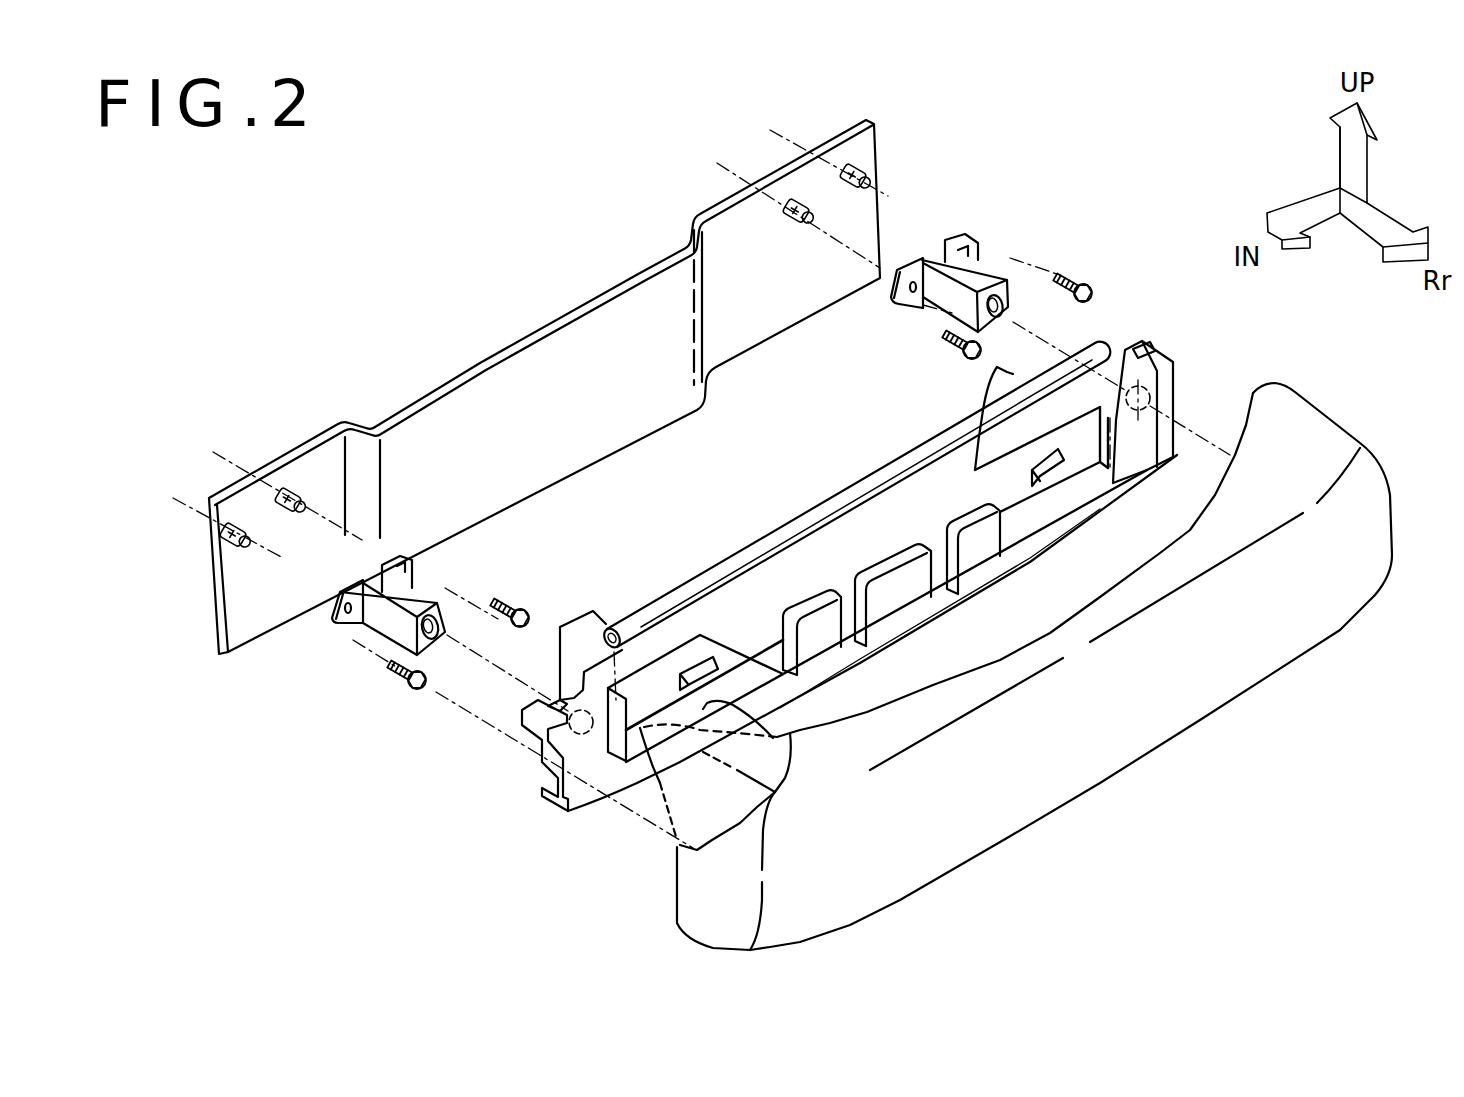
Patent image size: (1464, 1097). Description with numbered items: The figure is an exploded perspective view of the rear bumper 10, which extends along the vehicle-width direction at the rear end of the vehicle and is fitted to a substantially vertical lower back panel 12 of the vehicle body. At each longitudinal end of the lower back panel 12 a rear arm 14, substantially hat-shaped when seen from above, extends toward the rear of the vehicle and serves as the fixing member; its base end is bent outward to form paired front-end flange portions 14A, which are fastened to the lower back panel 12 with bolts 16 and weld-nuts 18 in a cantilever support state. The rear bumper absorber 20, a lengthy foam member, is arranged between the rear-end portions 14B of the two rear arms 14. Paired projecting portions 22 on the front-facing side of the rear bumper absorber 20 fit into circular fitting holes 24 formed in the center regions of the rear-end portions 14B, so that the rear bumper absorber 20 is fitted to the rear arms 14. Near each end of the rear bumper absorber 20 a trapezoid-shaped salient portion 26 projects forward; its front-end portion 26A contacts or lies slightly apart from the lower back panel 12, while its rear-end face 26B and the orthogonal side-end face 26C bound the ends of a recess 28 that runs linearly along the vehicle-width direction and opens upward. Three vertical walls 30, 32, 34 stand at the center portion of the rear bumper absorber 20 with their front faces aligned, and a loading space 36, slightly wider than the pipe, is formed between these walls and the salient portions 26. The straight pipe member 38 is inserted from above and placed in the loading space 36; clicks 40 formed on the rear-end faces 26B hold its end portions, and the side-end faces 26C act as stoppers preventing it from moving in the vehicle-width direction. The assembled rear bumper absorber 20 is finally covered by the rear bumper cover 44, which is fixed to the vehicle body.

The rear bumper 10 is at (1093, 194).
The lower back panel 12 is at (515, 343).
The rear arm 14 is at (360, 678).
The front-end flange portion 14A is at (412, 562).
The rear-end portion 14B is at (440, 605).
The bolt 16 is at (528, 611).
The weld-nut 18 is at (290, 488).
The rear bumper absorber 20 is at (588, 828).
The projecting portion 22 is at (570, 733).
The circular fitting hole 24 is at (438, 640).
The salient portion 26 is at (620, 618).
The front-end portion 26A is at (574, 618).
The rear-end face 26B is at (678, 660).
The side-end face 26C is at (1127, 463).
The recess 28 is at (768, 666).
The vertical wall 30 is at (815, 613).
The vertical wall 32 is at (893, 566).
The vertical wall 34 is at (957, 527).
The loading space 36 is at (778, 736).
The pipe member 38 is at (813, 518).
The click 40 is at (708, 655).
The rear bumper cover 44 is at (1105, 782).